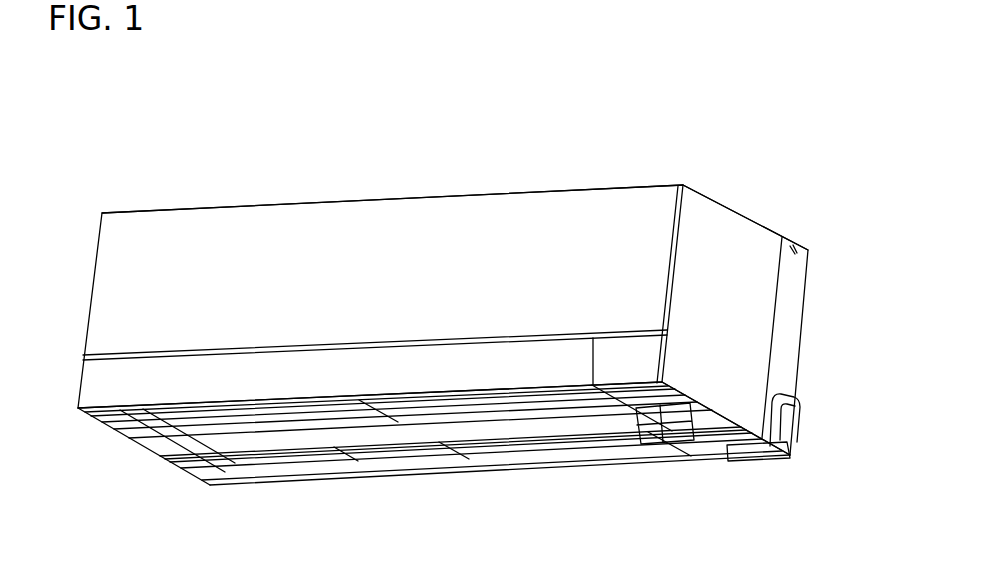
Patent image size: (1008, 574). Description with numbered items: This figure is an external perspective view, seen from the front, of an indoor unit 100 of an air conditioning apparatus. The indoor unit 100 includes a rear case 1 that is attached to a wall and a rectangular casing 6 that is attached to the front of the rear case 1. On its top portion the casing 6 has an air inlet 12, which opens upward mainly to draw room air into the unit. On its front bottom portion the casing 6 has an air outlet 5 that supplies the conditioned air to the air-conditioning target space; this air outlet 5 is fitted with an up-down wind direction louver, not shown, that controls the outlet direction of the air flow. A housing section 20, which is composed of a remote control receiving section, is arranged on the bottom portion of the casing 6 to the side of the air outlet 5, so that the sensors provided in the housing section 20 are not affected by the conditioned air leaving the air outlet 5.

The indoor unit 100 is at (787, 177).
The air inlet 12 is at (397, 198).
The rear case 1 is at (795, 288).
The casing 6 is at (742, 343).
The air outlet 5 is at (308, 438).
The housing section 20 is at (642, 443).